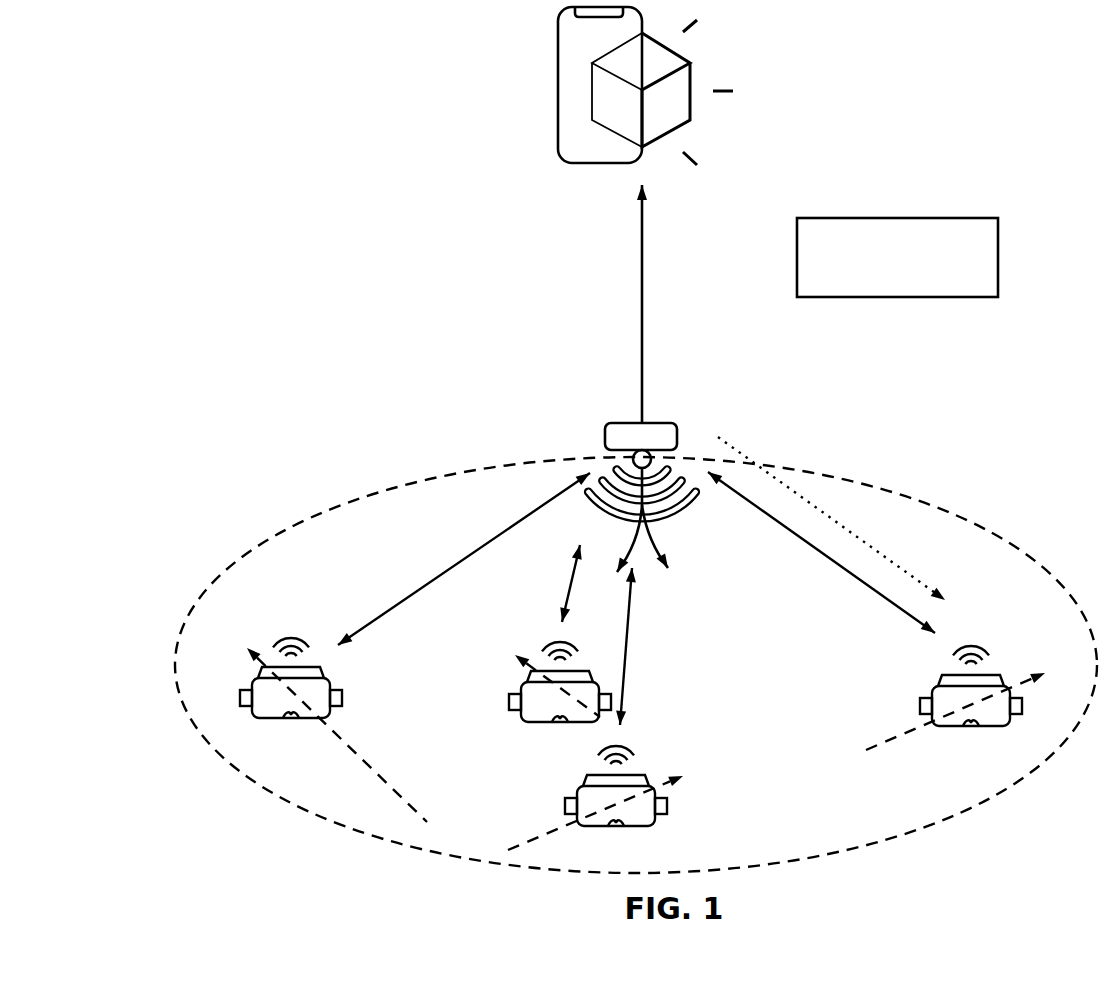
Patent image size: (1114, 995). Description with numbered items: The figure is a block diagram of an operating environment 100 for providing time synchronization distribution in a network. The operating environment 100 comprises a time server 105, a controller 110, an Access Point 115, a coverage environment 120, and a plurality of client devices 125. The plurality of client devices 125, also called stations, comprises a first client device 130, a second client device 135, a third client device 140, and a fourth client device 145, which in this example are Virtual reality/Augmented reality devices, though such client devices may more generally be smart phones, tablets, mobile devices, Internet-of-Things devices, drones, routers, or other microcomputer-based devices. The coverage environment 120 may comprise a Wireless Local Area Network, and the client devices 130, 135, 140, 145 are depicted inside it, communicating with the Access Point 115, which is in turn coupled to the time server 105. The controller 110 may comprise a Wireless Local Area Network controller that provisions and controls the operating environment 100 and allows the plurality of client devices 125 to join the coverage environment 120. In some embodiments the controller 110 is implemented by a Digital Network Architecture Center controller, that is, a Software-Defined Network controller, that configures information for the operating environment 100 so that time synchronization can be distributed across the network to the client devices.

The operating environment 100 is at (296, 93).
The time server 105 is at (558, 72).
The controller 110 is at (928, 218).
The Access Point (AP) 115 is at (658, 423).
The coverage environment 120 is at (372, 495).
The plurality of client devices 125 is at (436, 465).
The first client device 130 is at (921, 705).
The second client device 135 is at (566, 806).
The third client device 140 is at (510, 703).
The fourth client device 145 is at (342, 698).